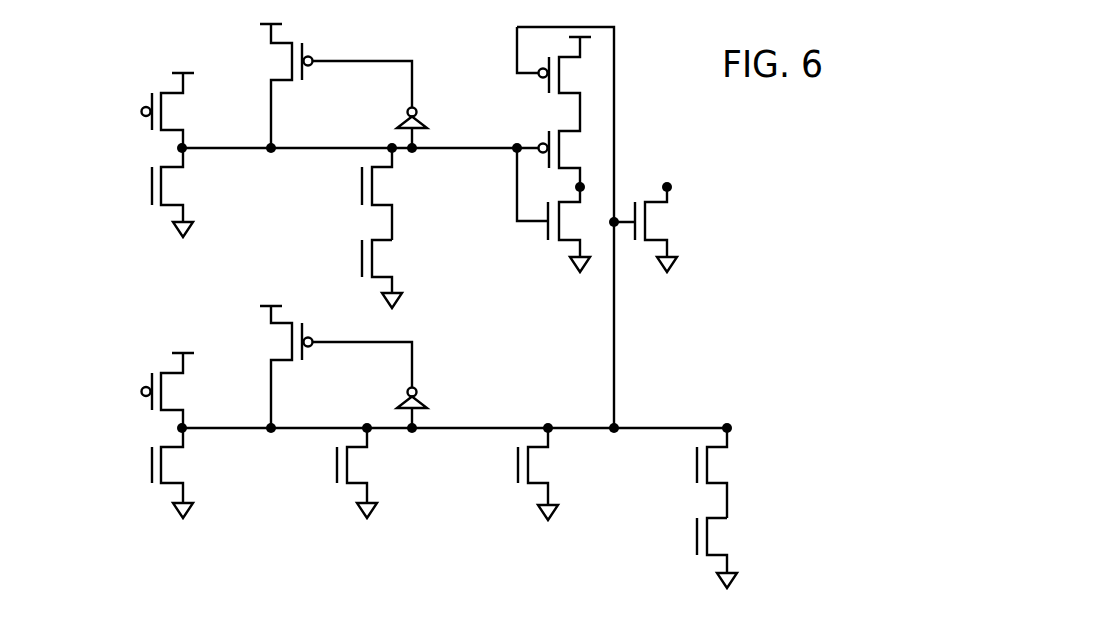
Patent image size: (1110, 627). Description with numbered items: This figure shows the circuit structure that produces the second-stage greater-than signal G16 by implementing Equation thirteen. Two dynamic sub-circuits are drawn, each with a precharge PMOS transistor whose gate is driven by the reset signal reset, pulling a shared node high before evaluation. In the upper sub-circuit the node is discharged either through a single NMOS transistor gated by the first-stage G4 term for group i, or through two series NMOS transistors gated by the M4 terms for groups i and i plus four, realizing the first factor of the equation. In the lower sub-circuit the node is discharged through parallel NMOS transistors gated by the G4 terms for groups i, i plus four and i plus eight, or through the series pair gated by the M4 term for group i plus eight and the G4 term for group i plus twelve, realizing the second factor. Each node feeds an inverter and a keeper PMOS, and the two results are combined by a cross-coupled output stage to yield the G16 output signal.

The reset signal reset is at (142, 112).